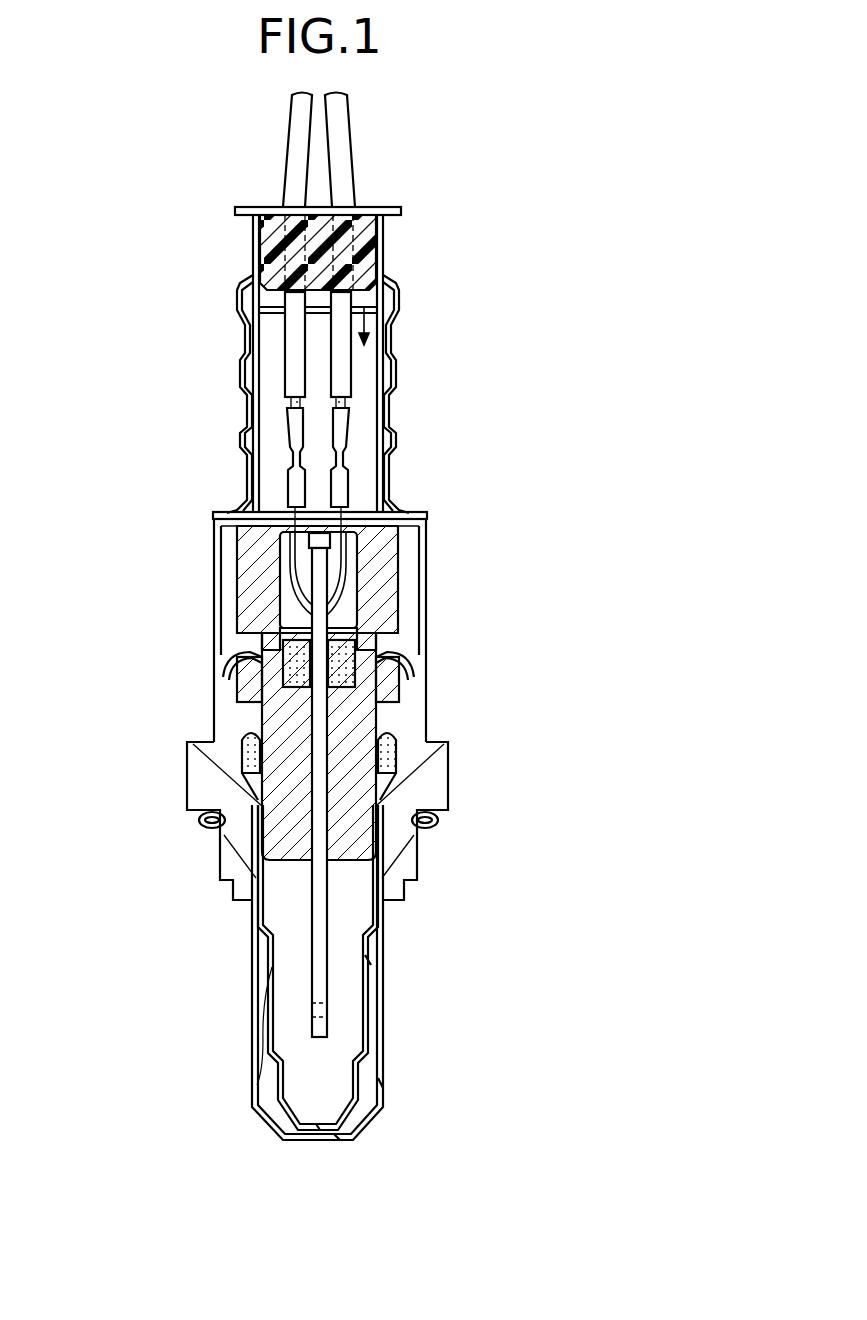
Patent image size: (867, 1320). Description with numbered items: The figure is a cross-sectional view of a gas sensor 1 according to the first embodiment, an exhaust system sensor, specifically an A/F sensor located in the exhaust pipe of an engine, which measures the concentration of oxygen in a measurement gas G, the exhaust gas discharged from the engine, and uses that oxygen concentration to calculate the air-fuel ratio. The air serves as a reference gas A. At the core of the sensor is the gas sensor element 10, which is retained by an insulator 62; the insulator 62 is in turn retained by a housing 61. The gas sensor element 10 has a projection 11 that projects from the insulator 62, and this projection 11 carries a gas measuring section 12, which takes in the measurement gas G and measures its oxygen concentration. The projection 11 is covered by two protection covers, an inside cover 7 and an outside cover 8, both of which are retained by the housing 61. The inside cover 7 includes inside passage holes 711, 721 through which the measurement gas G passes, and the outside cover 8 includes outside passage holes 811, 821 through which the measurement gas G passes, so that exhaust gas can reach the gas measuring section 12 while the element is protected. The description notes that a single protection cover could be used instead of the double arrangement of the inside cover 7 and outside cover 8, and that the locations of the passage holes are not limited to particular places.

The gas sensor 1 is at (437, 228).
The reference gas A is at (367, 305).
The housing 61 is at (208, 777).
The insulator 62 is at (357, 792).
The gas sensor element 10 is at (330, 903).
The projection 11 is at (322, 928).
The gas measuring section 12 is at (337, 1017).
The inside cover 7 is at (293, 957).
The inside passage hole 711 is at (367, 960).
The inside passage hole 721 is at (318, 1143).
The outside cover 8 is at (252, 998).
The outside passage hole 811 is at (385, 1082).
The outside passage hole 821 is at (338, 1143).
The measurement gas G is at (252, 1082).